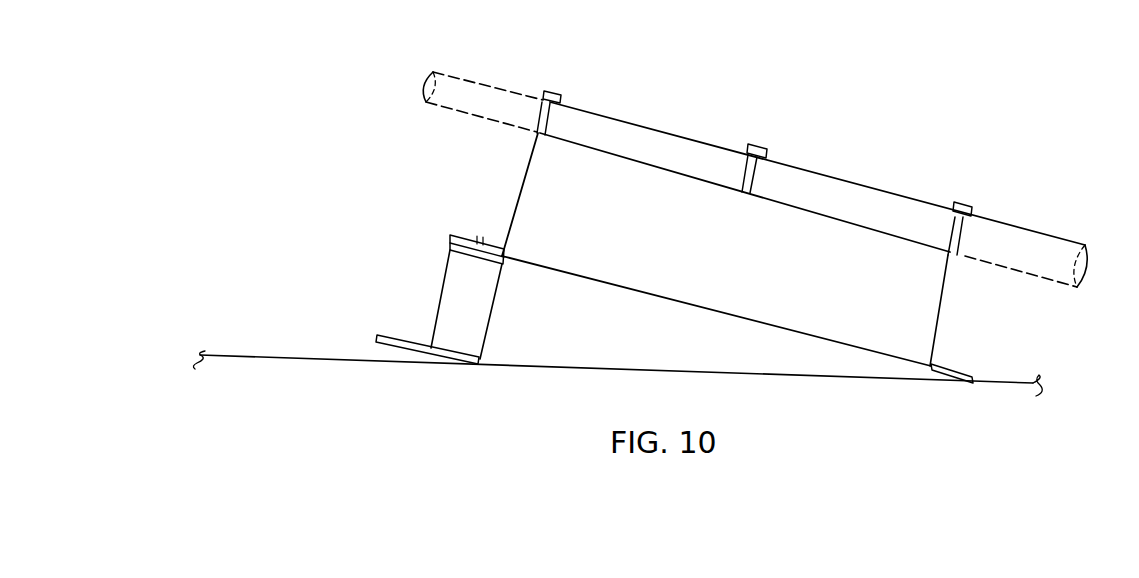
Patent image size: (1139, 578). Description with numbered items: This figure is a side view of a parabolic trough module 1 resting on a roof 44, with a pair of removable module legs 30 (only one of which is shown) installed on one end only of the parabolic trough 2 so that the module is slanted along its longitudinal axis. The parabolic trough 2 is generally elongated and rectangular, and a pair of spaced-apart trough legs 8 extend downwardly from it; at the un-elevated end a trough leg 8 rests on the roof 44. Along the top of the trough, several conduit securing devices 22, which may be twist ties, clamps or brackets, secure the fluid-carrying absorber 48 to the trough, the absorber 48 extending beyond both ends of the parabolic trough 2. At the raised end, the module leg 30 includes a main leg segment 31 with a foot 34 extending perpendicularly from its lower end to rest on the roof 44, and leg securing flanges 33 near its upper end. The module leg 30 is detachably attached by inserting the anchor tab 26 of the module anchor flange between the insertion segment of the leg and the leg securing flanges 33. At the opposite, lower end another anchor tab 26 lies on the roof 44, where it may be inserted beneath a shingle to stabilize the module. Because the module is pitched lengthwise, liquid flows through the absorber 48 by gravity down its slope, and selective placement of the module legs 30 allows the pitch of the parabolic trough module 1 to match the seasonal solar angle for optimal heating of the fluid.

The parabolic trough module 1 is at (942, 42).
The parabolic trough 2 is at (523, 157).
The trough leg 8 is at (925, 293).
The conduit securing device 22 is at (540, 115).
The anchor tab 26 is at (480, 237).
The module leg 30 is at (442, 284).
The main leg segment 31 is at (467, 305).
The leg securing flange 33 is at (450, 237).
The foot 34 is at (380, 335).
The roof 44 is at (243, 356).
The absorber 48 is at (617, 133).